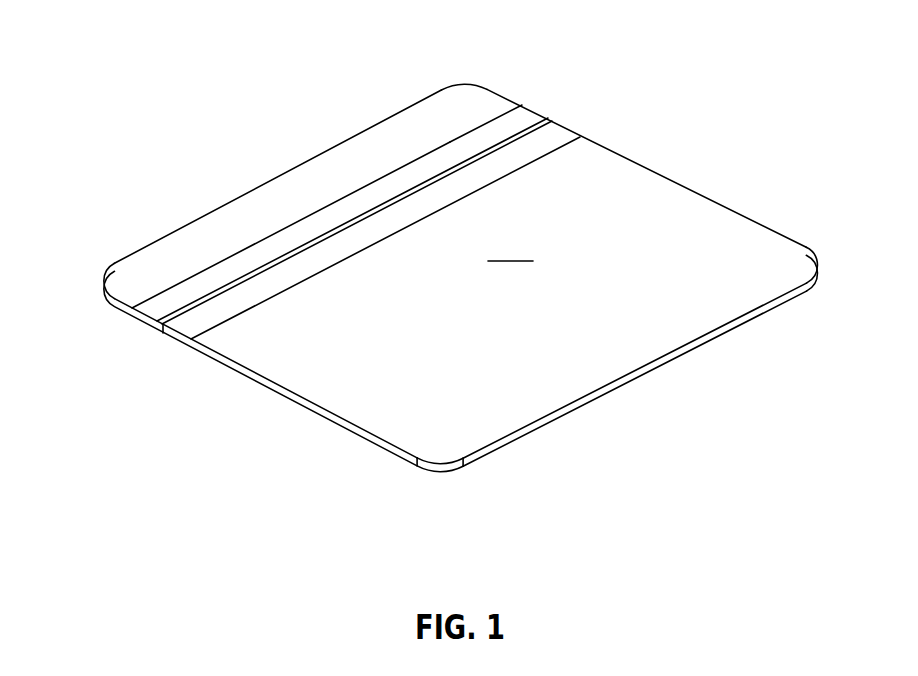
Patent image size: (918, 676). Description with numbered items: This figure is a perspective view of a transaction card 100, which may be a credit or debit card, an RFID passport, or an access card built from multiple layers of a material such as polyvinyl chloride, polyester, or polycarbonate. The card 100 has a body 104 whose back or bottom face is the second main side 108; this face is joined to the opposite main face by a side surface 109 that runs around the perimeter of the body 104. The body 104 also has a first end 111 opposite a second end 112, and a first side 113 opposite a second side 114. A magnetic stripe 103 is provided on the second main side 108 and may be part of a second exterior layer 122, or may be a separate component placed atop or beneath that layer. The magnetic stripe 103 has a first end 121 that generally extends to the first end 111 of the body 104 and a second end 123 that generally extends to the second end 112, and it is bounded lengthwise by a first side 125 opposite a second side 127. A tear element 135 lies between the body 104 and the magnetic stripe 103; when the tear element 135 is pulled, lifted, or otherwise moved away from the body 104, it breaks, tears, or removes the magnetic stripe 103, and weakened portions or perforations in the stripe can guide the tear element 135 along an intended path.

The transaction card 100 is at (130, 65).
The magnetic stripe 103 is at (468, 138).
The body 104 is at (747, 246).
The second main side 108 is at (748, 292).
The side surface 109 is at (522, 433).
The first end 111 is at (655, 170).
The second end 112 is at (322, 410).
The first side 113 is at (230, 203).
The second side 114 is at (640, 370).
The first end 121 is at (527, 115).
The second exterior layer 122 is at (510, 248).
The second end 123 is at (158, 313).
The first side 125 is at (365, 185).
The second side 127 is at (336, 268).
The tear element 135 is at (205, 297).